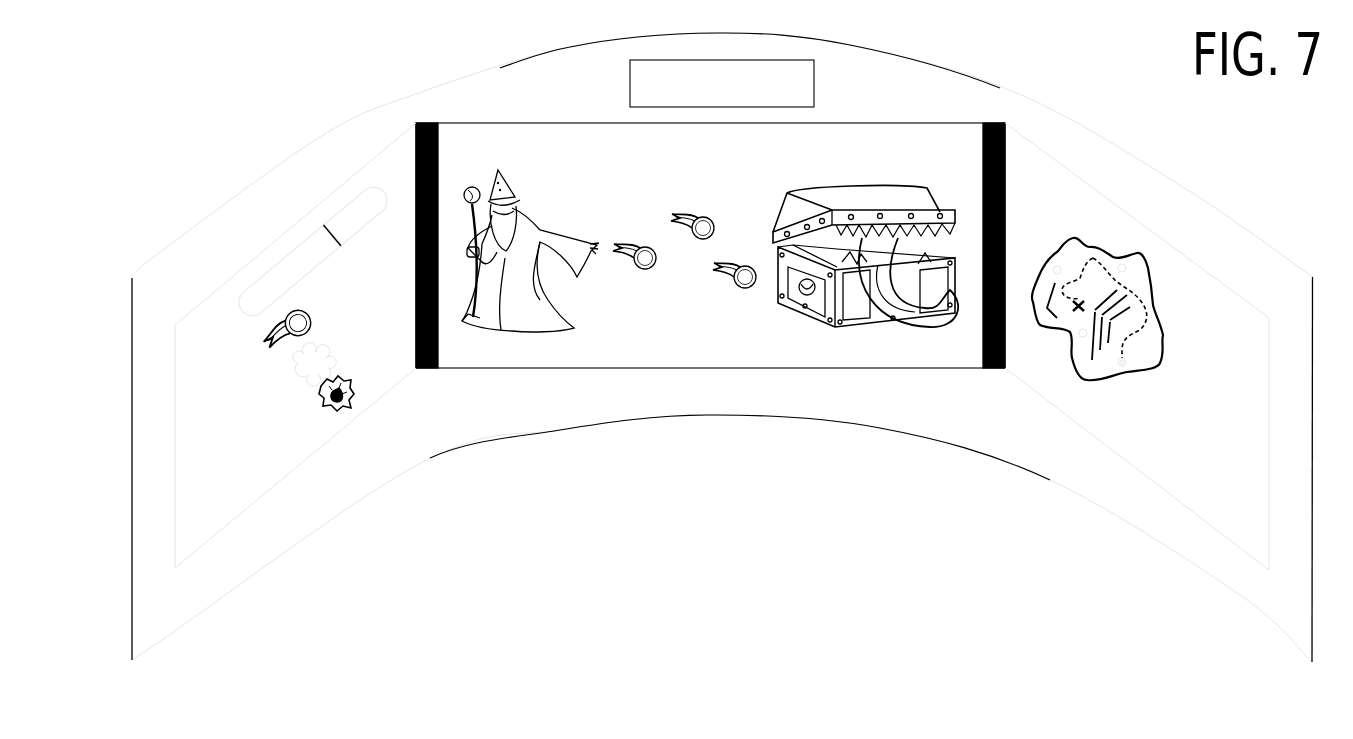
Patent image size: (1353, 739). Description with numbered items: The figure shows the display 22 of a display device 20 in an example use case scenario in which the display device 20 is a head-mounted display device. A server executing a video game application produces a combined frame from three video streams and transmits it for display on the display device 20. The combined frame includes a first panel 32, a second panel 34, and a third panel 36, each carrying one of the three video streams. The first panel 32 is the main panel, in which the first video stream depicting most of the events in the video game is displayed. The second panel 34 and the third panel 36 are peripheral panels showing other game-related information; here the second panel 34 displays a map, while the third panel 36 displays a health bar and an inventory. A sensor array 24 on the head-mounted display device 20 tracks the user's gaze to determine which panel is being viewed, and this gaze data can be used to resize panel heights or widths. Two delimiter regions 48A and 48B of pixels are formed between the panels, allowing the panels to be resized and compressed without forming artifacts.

The display device 20 is at (320, 137).
The display 22 is at (830, 368).
The sensor array 24 is at (800, 93).
The first panel 32 is at (577, 151).
The second panel 34 is at (1243, 486).
The third panel 36 is at (267, 488).
The delimiter region 48A is at (431, 373).
The delimiter region 48B is at (995, 370).